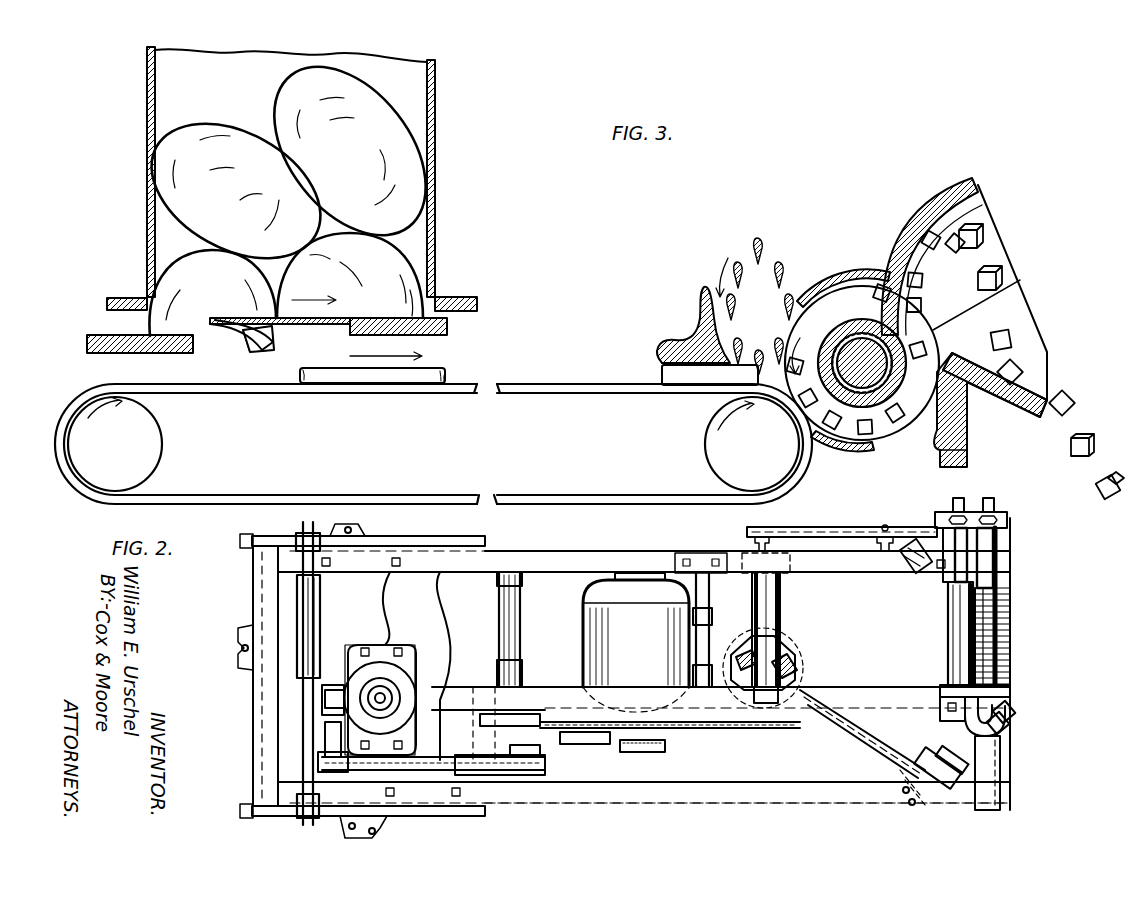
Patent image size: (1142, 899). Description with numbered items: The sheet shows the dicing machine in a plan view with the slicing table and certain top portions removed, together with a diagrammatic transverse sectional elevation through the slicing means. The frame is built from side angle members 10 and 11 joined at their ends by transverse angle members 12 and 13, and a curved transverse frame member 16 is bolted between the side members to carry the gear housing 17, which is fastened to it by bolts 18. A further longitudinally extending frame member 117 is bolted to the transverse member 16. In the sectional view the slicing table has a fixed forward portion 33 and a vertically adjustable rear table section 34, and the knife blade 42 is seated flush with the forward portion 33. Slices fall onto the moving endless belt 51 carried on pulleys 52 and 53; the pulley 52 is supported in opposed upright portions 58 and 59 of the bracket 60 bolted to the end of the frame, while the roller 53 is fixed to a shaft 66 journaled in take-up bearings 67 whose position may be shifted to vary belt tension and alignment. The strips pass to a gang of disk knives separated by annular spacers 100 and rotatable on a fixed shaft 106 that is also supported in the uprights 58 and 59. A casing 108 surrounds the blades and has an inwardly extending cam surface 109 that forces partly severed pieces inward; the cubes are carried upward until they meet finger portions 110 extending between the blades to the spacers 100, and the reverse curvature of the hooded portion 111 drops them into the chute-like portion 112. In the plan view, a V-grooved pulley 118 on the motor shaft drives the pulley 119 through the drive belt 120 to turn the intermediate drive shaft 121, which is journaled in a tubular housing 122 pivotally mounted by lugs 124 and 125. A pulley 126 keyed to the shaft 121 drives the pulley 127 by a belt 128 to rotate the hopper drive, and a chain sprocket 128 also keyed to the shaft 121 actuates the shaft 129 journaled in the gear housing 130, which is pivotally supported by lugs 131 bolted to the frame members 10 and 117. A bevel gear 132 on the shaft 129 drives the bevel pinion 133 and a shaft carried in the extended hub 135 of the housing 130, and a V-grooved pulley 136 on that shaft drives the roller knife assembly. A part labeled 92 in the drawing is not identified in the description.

In FIG. 2, the side angle member 10 is at (580, 551).
In FIG. 2, the side angle member 11 is at (580, 806).
In FIG. 2, the transverse angle member 12 is at (276, 607).
In FIG. 2, the transverse angle member 13 is at (992, 762).
In FIG. 2, the transverse frame member 16 is at (412, 640).
In FIG. 2, the gear housing 17 is at (370, 700).
In FIG. 2, the bolts 18 is at (357, 652).
In FIG. 3, the forward portion of slicing table 33 is at (447, 327).
In FIG. 3, the rear table section 34 is at (105, 334).
In FIG. 3, the knife blade 42 is at (296, 324).
In FIG. 3, the endless belt 51 is at (540, 384).
In FIG. 3, the pulley 52 is at (712, 438).
In FIG. 2, the pulley 52 is at (948, 595).
In FIG. 3, the belt supporting roller 53 is at (88, 430).
In FIG. 2, the belt supporting roller 53 is at (312, 590).
In FIG. 2, the upright portion 58 is at (1003, 512).
In FIG. 2, the upright portion 59 is at (1002, 690).
In FIG. 2, the bracket 60 is at (1001, 572).
In FIG. 2, the shaft 66 is at (310, 746).
In FIG. 2, the take-up bearings 67 is at (312, 545).
In FIG. 2, the hook 92 is at (1010, 716).
In FIG. 3, the annular spacers 100 is at (945, 382).
In FIG. 3, the fixed shaft 106 is at (700, 328).
In FIG. 3, the casing 108 is at (858, 292).
In FIG. 3, the cam surface 109 is at (880, 452).
In FIG. 3, the finger portions 110 is at (884, 292).
In FIG. 3, the hooded portion 111 is at (985, 208).
In FIG. 3, the chute-like portion 112 is at (1040, 392).
In FIG. 2, the longitudinally extending frame member 117 is at (872, 690).
In FIG. 2, the V-grooved pulley 118 is at (646, 752).
In FIG. 2, the V-grooved pulley 119 is at (490, 722).
In FIG. 2, the drive belt 120 is at (586, 744).
In FIG. 2, the intermediate drive shaft 121 is at (526, 758).
In FIG. 2, the tubular housing 122 is at (512, 618).
In FIG. 2, the lug 124 is at (512, 660).
In FIG. 2, the lug 125 is at (520, 580).
In FIG. 2, the V-grooved pulley 126 is at (520, 776).
In FIG. 2, the pulley 127 is at (340, 772).
In FIG. 2, the belt 128 is at (660, 730).
In FIG. 2, the shaft 129 is at (792, 652).
In FIG. 2, the gear housing 130 is at (772, 626).
In FIG. 2, the lugs 131 is at (780, 572).
In FIG. 2, the bevel gear 132 is at (775, 640).
In FIG. 2, the bevel pinion 133 is at (800, 664).
In FIG. 2, the extended hub 135 is at (868, 718).
In FIG. 2, the V-grooved pulley 136 is at (960, 762).